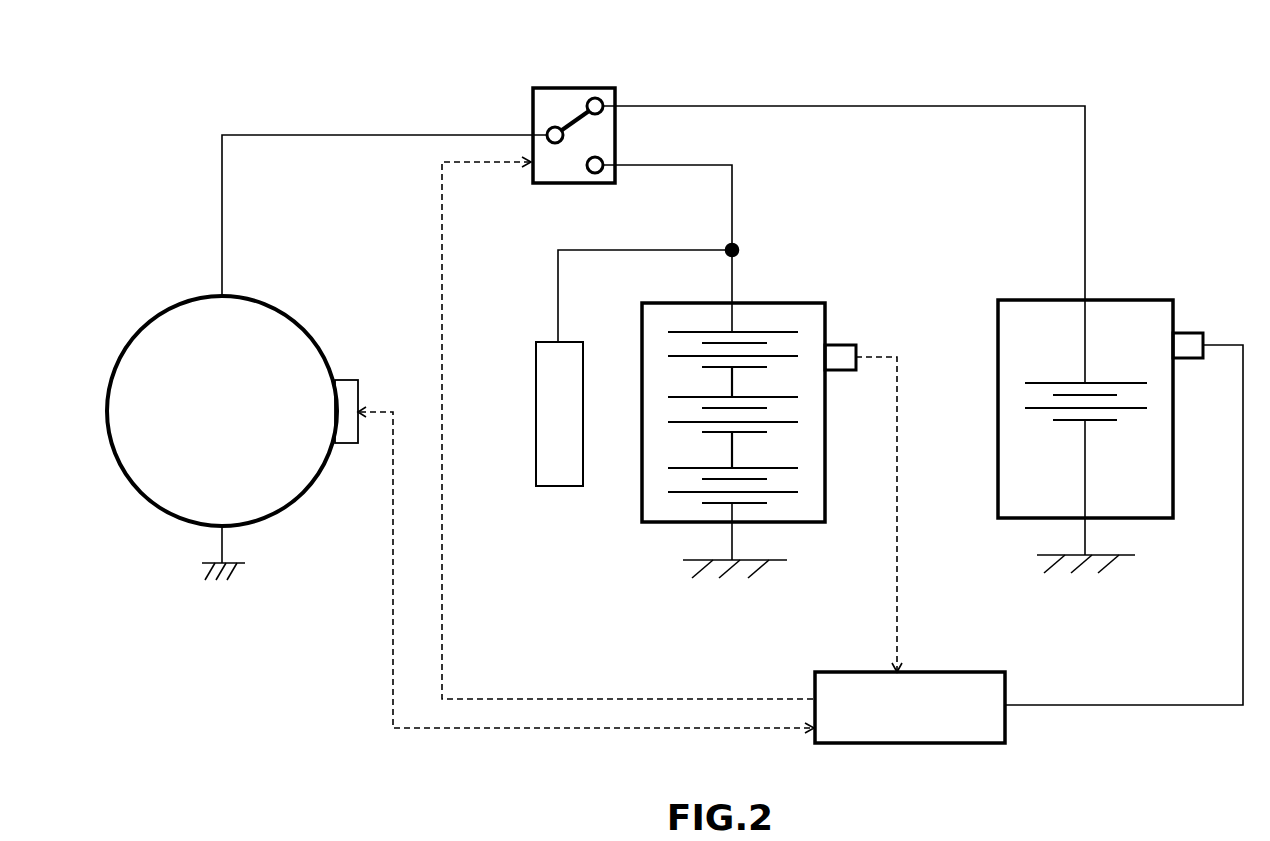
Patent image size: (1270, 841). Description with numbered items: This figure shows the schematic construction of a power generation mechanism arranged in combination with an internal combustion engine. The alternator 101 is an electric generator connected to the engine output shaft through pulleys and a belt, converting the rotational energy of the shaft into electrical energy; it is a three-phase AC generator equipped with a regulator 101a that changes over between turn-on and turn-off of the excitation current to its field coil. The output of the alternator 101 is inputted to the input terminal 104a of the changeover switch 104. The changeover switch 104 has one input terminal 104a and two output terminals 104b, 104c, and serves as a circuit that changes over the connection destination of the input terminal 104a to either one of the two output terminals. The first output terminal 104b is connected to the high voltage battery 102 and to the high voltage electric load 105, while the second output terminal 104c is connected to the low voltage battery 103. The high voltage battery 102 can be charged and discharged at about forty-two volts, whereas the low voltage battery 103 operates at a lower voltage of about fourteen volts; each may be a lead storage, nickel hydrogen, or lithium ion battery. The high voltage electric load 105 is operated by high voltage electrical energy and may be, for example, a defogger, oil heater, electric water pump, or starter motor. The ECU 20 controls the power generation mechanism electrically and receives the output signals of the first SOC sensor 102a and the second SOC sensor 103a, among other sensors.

The alternator 101 is at (287, 307).
The regulator 101a is at (347, 380).
The high voltage battery 102 is at (757, 303).
The first SOC sensor 102a is at (847, 345).
The low voltage battery 103 is at (1155, 300).
The second SOC sensor 103a is at (1197, 333).
The changeover switch 104 is at (556, 88).
The input terminal 104a is at (549, 128).
The first output terminal 104b is at (600, 158).
The second output terminal 104c is at (600, 99).
The high voltage electric load 105 is at (555, 486).
The electronic control unit (ECU) 20 is at (962, 743).